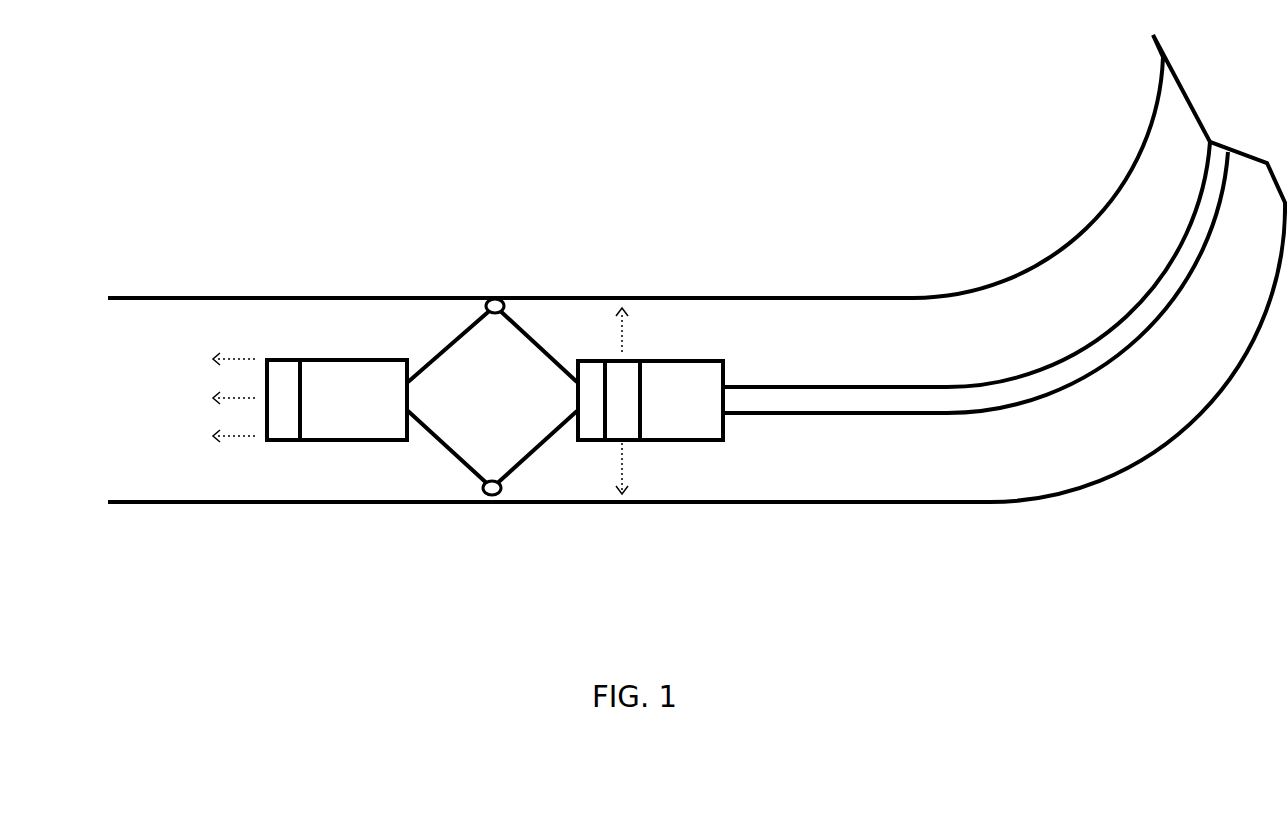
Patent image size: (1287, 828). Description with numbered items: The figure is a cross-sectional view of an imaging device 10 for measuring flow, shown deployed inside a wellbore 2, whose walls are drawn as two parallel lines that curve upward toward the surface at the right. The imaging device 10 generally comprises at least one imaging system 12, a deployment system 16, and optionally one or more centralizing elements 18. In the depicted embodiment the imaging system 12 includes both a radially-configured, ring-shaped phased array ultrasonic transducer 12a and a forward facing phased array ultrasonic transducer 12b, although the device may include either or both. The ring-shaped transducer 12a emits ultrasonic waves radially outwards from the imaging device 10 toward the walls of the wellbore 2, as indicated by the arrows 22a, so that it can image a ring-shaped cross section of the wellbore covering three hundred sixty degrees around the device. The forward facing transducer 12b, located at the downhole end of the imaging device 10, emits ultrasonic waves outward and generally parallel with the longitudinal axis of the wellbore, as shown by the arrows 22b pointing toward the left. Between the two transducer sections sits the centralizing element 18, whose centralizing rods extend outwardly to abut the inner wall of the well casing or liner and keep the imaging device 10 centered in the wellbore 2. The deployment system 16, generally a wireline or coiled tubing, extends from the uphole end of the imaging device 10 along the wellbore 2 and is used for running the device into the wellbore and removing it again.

The wellbore 2 is at (803, 500).
The imaging device 10 is at (588, 200).
The imaging system 12 is at (348, 360).
The radially-configured phased array ultrasonic transducer 12a is at (628, 440).
The forward facing phased array ultrasonic transducer 12b is at (288, 440).
The deployment system 16 is at (807, 387).
The centralizing element 18 is at (523, 477).
The arrows 22a is at (623, 335).
The arrows 22b is at (240, 438).